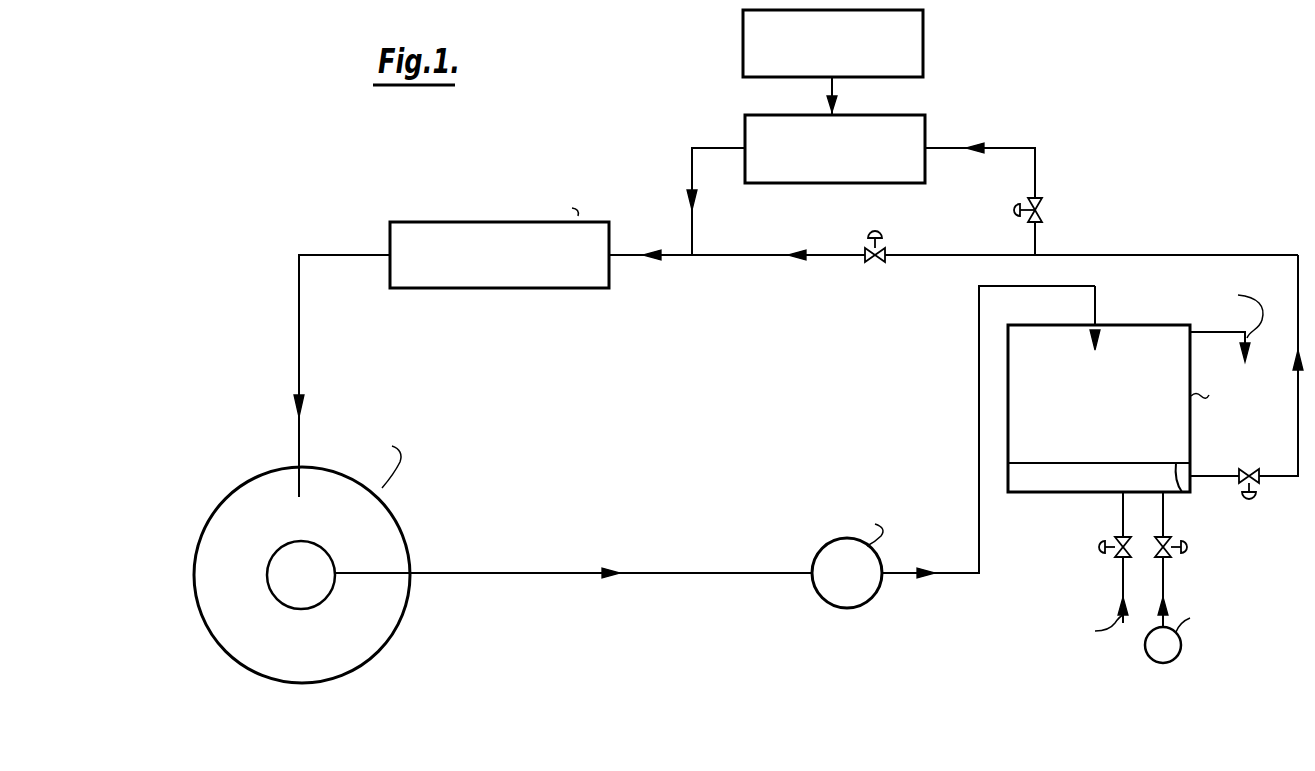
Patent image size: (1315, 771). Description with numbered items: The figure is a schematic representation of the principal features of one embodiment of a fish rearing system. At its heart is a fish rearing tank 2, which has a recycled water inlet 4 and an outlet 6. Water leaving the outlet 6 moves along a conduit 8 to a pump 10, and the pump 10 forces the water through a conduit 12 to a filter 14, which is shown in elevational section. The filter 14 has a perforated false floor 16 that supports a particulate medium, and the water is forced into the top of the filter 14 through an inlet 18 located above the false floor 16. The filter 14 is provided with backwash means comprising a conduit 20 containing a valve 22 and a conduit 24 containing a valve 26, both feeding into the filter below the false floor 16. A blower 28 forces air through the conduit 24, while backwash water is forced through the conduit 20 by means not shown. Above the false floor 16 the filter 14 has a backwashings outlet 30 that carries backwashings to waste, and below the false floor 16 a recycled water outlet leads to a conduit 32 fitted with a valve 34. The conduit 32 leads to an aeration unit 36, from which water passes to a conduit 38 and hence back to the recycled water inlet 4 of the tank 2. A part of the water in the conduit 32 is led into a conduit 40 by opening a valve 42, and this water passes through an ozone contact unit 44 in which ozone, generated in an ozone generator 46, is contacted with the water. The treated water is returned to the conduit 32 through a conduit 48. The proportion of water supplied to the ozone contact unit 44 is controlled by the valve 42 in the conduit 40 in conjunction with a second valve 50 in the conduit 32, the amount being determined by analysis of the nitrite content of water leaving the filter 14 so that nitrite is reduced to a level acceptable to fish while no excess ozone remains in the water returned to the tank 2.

The fish rearing tank 2 is at (378, 537).
The recycled water inlet 4 is at (295, 480).
The outlet 6 is at (277, 554).
The conduit 8 is at (392, 576).
The pump 10 is at (828, 585).
The conduit 12 is at (980, 528).
The filter 14 is at (1182, 432).
The false floor 16 is at (1178, 492).
The inlet 18 is at (1094, 308).
The conduit 20 is at (1122, 581).
The valve 22 is at (1120, 540).
The conduit 24 is at (1166, 574).
The valve 26 is at (1166, 541).
The blower 28 is at (1177, 646).
The backwashings outlet 30 is at (1235, 332).
The conduit 32 is at (1269, 478).
The valve 34 is at (1252, 472).
The aeration unit 36 is at (585, 236).
The conduit 38 is at (300, 331).
The conduit 40 is at (1036, 165).
The valve 42 is at (1044, 204).
The ozone contact unit 44 is at (915, 134).
The ozone generator 46 is at (923, 42).
The conduit 48 is at (690, 171).
The second valve 50 is at (880, 245).